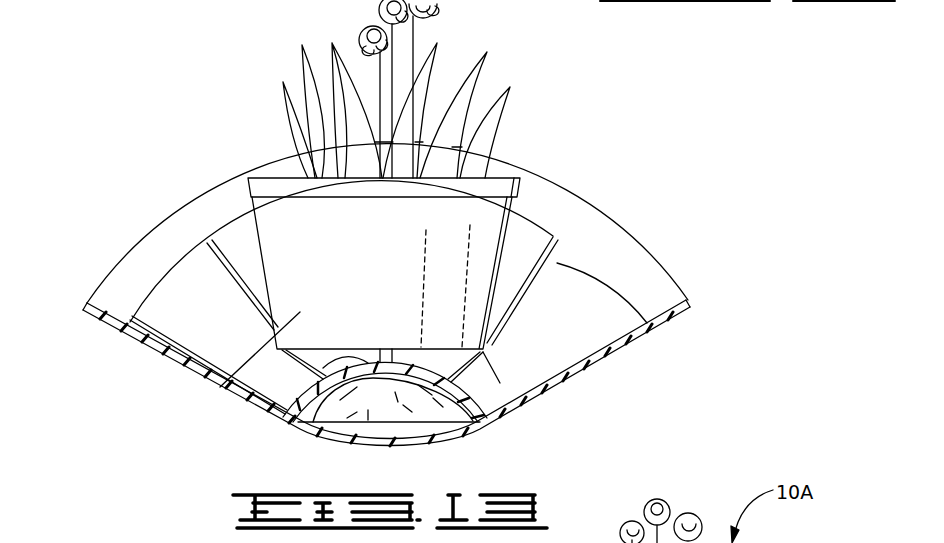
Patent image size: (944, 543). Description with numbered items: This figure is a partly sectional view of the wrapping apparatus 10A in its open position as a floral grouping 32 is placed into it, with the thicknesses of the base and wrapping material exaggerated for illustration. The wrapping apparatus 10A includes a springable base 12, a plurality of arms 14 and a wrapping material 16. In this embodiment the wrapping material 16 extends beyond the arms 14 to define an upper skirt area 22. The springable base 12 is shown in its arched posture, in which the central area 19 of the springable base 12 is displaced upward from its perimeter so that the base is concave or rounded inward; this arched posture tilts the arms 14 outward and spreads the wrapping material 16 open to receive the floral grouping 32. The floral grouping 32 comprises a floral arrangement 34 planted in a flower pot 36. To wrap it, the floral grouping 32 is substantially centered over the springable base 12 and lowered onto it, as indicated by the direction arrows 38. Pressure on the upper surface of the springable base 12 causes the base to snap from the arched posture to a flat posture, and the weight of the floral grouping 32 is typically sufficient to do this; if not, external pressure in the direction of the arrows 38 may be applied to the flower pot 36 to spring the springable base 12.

The wrapping apparatus 10A is at (147, 232).
The springable base 12 is at (448, 436).
The arms 14 is at (560, 262).
The wrapping material 16 is at (160, 348).
The central area 19 is at (280, 414).
The upper skirt area 22 is at (613, 237).
The floral grouping 32 is at (264, 176).
The floral arrangement 34 is at (420, 83).
The flower pot 36 is at (223, 380).
The direction arrows 38 is at (213, 244).